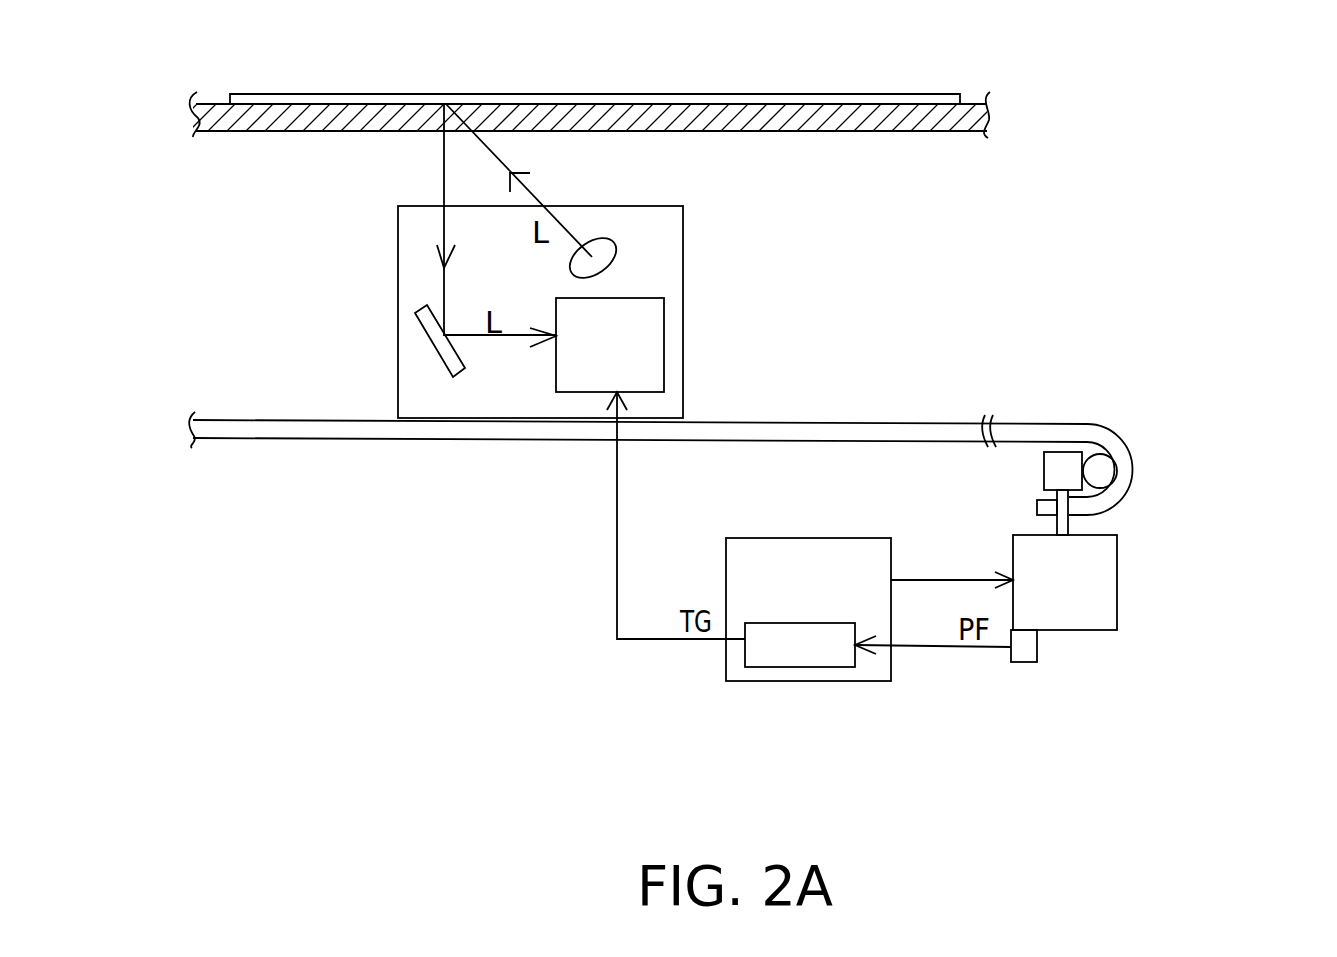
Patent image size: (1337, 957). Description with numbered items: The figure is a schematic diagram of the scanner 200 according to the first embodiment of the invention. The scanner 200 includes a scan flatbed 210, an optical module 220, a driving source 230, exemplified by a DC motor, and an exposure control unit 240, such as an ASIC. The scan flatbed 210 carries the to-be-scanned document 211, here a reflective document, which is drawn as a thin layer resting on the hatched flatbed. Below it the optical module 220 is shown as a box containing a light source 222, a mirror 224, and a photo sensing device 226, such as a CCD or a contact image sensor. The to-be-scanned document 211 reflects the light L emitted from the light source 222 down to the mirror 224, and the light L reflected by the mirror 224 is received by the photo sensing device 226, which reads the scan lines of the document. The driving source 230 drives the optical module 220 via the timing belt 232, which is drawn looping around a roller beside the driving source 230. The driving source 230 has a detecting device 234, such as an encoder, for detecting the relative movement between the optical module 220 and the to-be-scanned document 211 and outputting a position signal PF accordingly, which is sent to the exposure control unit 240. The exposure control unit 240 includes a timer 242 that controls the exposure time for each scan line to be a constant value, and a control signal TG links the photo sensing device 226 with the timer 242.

The scanner 200 is at (495, 668).
The scan flatbed 210 is at (955, 131).
The to-be-scanned document 211 is at (838, 97).
The optical module 220 is at (683, 268).
The light source 222 is at (608, 240).
The mirror 224 is at (428, 341).
The photo sensing device 226 is at (664, 338).
The driving source 230 is at (1117, 588).
The timing belt 232 is at (1097, 436).
The detecting device 234 is at (1037, 646).
The exposure control unit 240 is at (808, 538).
The timer 242 is at (798, 667).